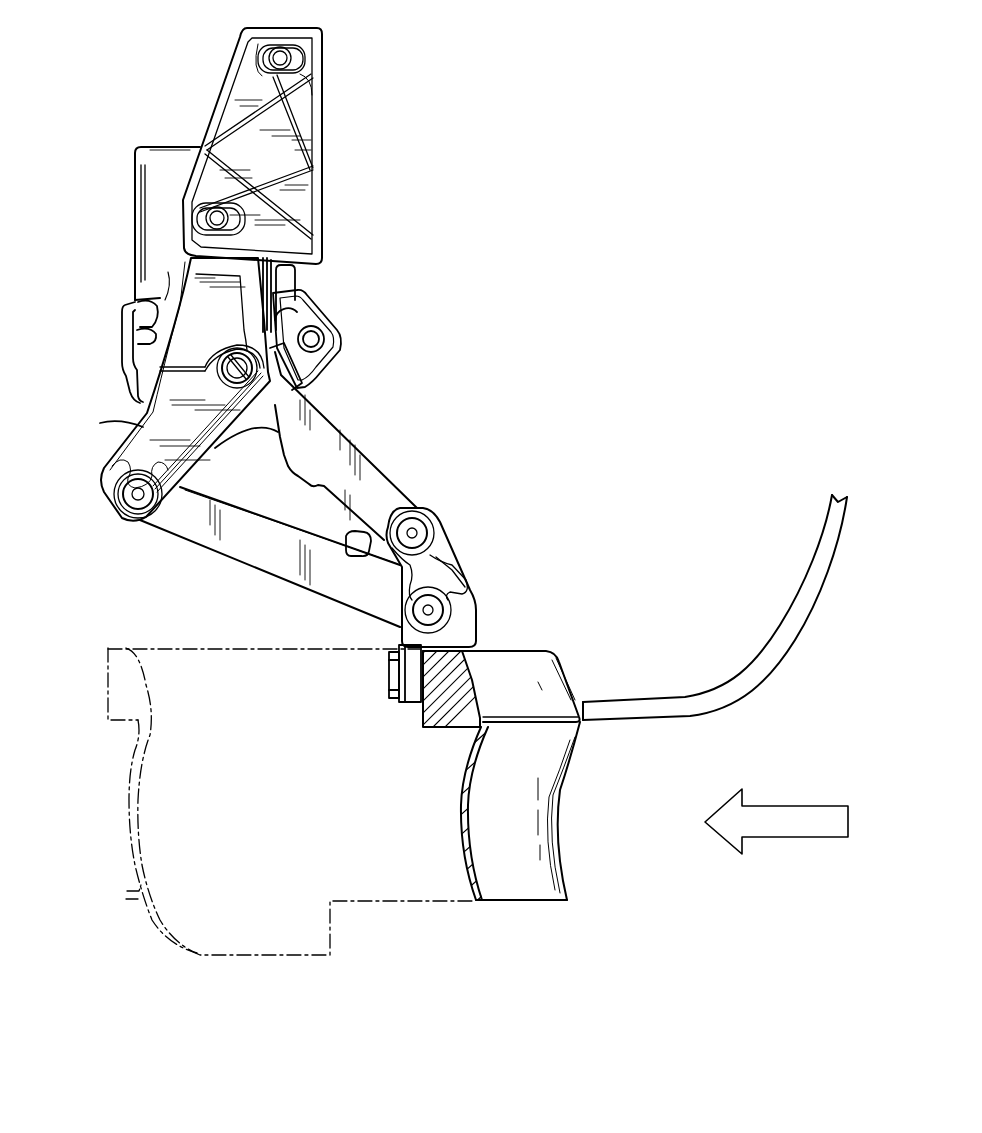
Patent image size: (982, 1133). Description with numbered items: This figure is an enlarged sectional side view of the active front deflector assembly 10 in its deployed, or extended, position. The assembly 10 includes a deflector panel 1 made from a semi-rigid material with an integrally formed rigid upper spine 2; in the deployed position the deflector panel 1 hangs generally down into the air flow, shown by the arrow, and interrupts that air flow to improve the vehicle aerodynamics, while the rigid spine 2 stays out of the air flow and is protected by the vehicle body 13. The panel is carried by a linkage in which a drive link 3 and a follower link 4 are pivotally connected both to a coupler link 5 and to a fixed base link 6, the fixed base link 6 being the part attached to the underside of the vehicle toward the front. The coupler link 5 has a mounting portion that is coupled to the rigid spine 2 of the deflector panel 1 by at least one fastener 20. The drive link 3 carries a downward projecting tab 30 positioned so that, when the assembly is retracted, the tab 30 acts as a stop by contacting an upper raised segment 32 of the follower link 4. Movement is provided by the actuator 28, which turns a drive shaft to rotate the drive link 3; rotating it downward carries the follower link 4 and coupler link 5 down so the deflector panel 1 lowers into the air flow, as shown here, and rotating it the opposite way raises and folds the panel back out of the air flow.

The active front deflector assembly 10 is at (70, 123).
The actuator 28 is at (157, 228).
The fixed base link 6 is at (152, 425).
The drive link 3 is at (337, 442).
The follower link 4 is at (258, 555).
The coupler link 5 is at (448, 560).
The tab 30 is at (288, 467).
The upper raised segment 32 is at (345, 540).
The fastener 20 is at (388, 668).
The rigid upper spine 2 is at (547, 655).
The deflector panel 1 is at (562, 840).
The vehicle body 13 is at (778, 657).